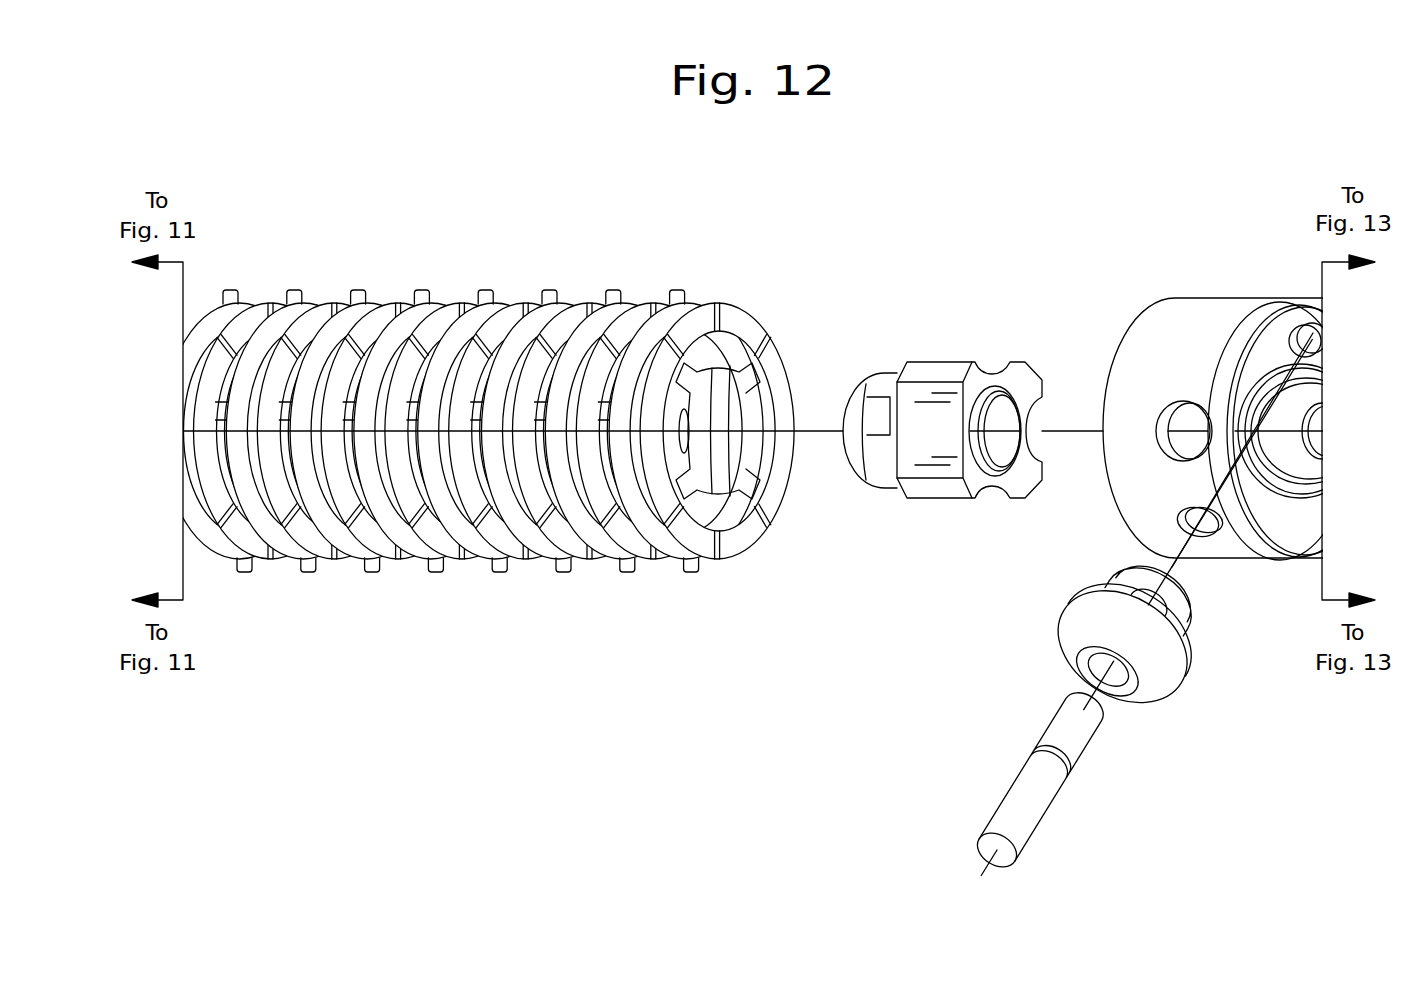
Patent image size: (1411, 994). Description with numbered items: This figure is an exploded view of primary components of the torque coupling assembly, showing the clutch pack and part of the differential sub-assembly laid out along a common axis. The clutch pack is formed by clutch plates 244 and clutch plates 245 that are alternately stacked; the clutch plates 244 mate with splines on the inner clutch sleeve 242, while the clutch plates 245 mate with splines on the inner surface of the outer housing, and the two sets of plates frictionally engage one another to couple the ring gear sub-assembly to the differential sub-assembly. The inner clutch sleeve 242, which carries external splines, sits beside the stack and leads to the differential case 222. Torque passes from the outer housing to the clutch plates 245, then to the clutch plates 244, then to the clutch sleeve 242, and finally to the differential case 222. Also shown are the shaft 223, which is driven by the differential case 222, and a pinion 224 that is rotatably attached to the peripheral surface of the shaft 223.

The differential case 222 is at (1217, 312).
The shaft 223 is at (1033, 813).
The pinion 224 is at (1163, 677).
The inner clutch sleeve 242 is at (937, 366).
The clutch plate 244 is at (320, 308).
The clutch plate 245 is at (360, 296).